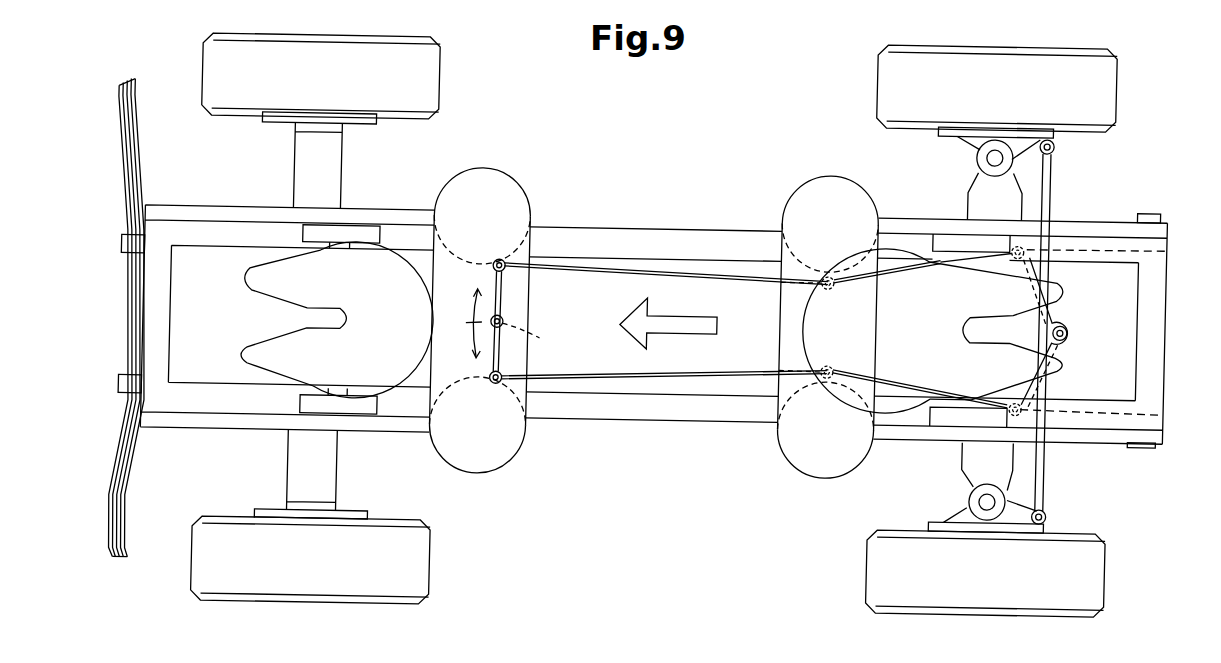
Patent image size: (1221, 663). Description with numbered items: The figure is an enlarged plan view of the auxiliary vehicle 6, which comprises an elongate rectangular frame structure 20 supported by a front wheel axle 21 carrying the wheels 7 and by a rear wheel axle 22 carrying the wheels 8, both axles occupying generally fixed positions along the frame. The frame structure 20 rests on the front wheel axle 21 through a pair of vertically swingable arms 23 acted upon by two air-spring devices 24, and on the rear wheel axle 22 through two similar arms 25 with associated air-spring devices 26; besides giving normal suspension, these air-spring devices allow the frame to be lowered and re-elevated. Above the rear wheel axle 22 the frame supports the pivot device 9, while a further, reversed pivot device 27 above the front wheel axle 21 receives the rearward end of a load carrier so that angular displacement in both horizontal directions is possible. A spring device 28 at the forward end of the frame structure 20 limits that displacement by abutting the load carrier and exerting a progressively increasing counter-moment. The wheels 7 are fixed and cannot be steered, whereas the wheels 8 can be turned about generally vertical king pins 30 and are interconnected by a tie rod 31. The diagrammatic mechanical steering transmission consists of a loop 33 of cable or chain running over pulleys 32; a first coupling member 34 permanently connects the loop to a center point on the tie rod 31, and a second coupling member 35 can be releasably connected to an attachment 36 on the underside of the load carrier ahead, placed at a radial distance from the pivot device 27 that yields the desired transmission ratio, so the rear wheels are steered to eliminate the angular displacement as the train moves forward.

The auxiliary vehicle 6 is at (643, 205).
The wheels 7 is at (434, 86).
The wheels 8 is at (873, 82).
The pivot device 9 is at (941, 340).
The frame structure 20 is at (662, 415).
The front wheel axle 21 is at (296, 166).
The rear wheel axle 22 is at (967, 201).
The vertically swingable arms 23 is at (237, 218).
The air-spring devices 24 is at (497, 188).
The arms 25 is at (1063, 220).
The air-spring devices 26 is at (799, 192).
The pivot device 27 is at (369, 285).
The spring device 28 is at (127, 117).
The king pins 30 is at (973, 152).
The tie rod 31 is at (1047, 188).
The pulleys 32 is at (502, 265).
The loop 33 is at (699, 271).
The first coupling member 34 is at (1066, 330).
The second coupling member 35 is at (503, 323).
The attachment 36 is at (532, 343).